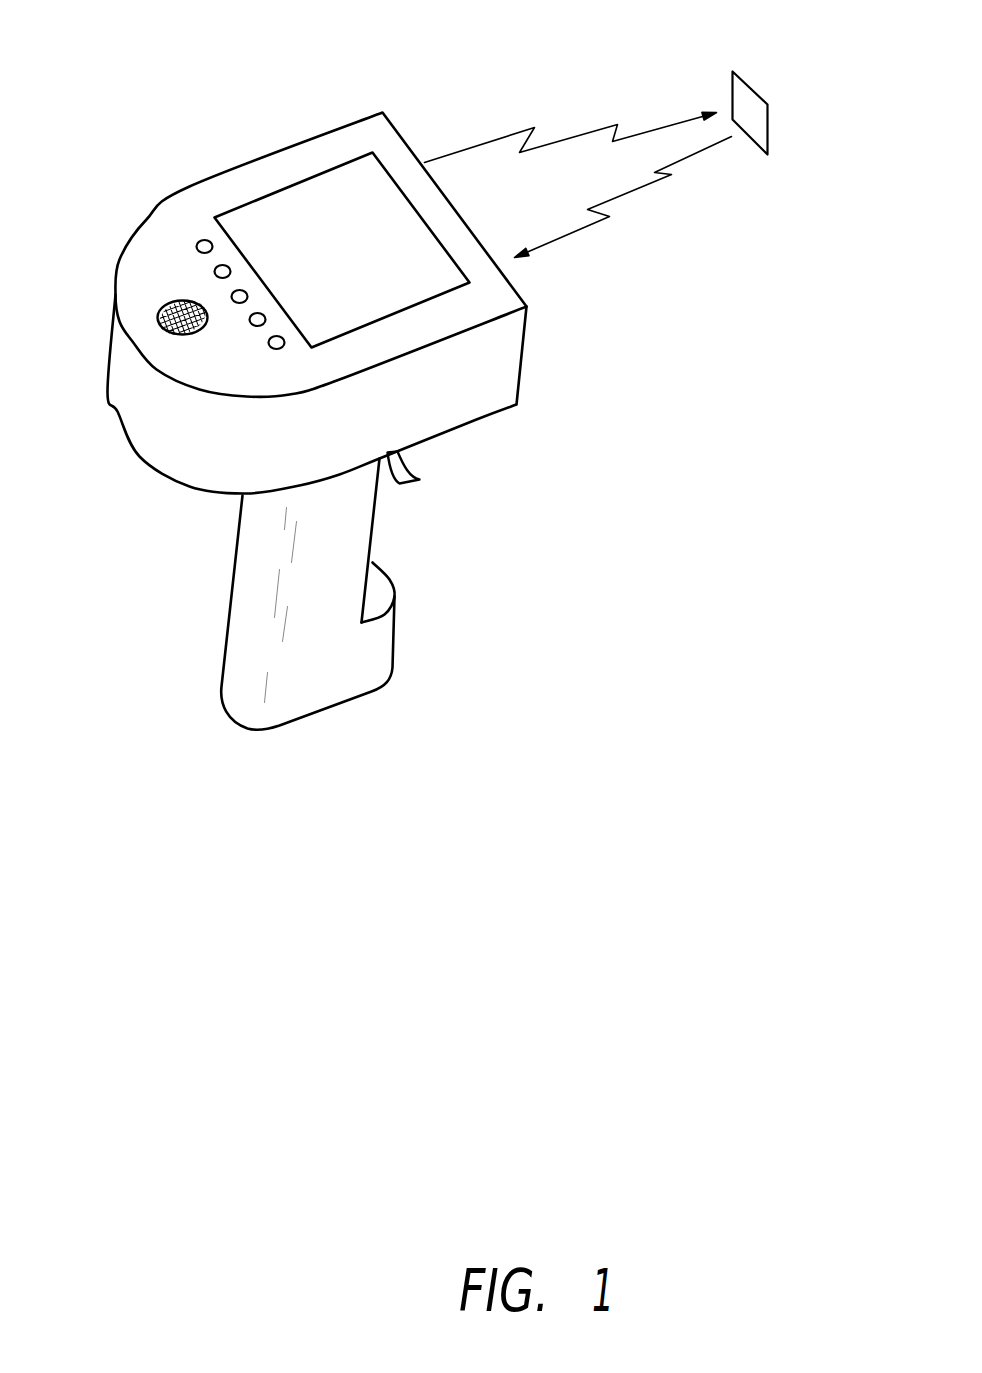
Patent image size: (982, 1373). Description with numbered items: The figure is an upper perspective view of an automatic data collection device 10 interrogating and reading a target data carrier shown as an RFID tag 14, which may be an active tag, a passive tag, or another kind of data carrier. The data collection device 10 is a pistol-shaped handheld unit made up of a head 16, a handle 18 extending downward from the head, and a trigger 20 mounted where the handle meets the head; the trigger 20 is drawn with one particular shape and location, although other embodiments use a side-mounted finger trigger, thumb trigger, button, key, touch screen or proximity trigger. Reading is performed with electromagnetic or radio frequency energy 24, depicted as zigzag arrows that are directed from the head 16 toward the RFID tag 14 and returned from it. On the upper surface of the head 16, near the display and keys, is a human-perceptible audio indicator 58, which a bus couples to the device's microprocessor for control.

The automatic data collection device 10 is at (225, 100).
The RFID tag 14 is at (755, 92).
The head 16 is at (160, 248).
The handle 18 is at (248, 593).
The trigger 20 is at (397, 485).
The energy 24 is at (578, 137).
The audio indicator 58 is at (168, 323).